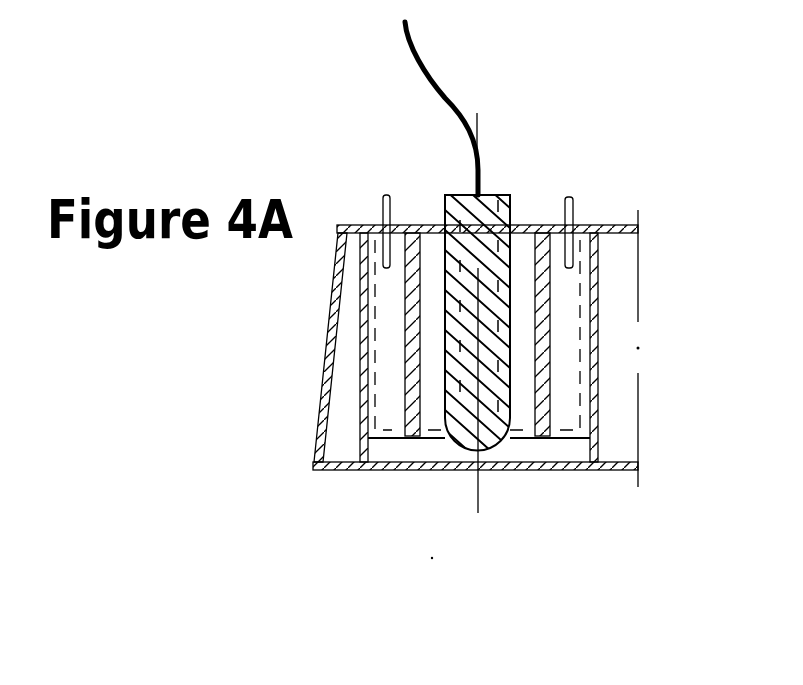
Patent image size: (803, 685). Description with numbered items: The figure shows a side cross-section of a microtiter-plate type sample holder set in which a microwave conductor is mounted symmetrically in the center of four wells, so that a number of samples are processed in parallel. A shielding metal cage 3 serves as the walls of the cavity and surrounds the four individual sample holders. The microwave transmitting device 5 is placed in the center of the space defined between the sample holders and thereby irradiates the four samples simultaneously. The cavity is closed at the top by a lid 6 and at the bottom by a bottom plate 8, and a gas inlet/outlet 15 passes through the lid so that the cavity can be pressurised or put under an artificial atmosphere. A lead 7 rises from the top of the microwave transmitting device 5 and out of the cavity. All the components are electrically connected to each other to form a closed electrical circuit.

The shielding metal cage 3 is at (595, 357).
The microwave transmitting device 5 is at (498, 410).
The lid 6 is at (537, 225).
The lead wire 7 is at (428, 78).
The bottom plate 8 is at (364, 462).
The gas inlet/outlet 15 is at (383, 212).